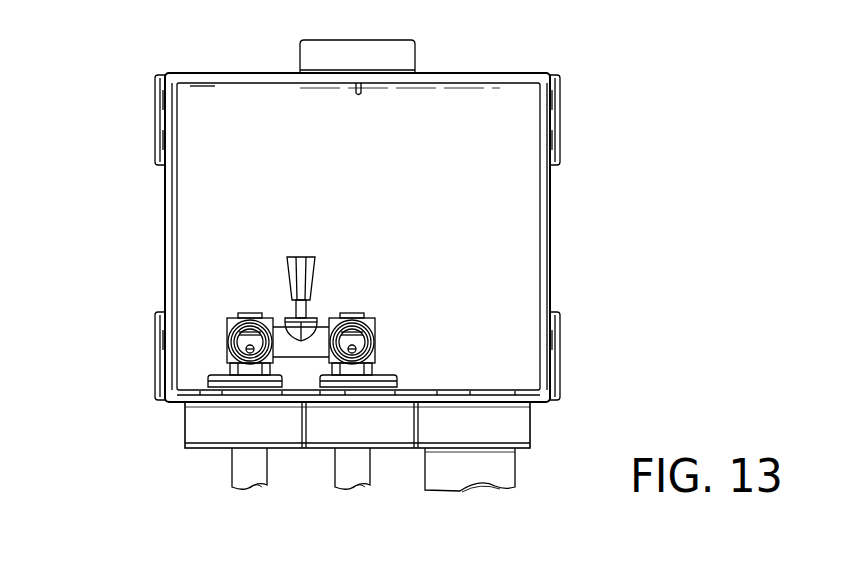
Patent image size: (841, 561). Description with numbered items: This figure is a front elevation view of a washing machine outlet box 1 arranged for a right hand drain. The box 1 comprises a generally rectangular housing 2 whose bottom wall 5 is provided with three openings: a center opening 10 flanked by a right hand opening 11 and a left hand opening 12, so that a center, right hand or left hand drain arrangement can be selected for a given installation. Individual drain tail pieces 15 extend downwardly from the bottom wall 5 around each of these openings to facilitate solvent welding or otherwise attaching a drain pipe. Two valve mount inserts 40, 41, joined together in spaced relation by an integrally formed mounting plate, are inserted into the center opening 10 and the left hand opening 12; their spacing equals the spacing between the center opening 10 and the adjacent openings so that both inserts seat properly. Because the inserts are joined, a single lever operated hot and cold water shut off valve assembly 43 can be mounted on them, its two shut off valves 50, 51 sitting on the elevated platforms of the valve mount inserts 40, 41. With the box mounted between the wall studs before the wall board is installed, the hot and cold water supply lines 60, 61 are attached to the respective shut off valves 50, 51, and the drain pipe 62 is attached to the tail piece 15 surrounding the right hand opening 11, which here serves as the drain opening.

The box 1 is at (128, 139).
The housing 2 is at (515, 62).
The bottom wall 5 is at (526, 385).
The center opening 10 is at (350, 400).
The right hand opening 11 is at (493, 405).
The left hand opening 12 is at (227, 405).
The drain tail piece 15 is at (510, 433).
The valve mount insert 40 is at (203, 373).
The valve mount insert 41 is at (401, 372).
The single lever operated hot and cold water shut off valve assembly 43 is at (387, 317).
The shut off valve 50 is at (222, 343).
The shut off valve 51 is at (383, 343).
The hot water supply line 60 is at (235, 470).
The cold water supply line 61 is at (370, 465).
The drain pipe 62 is at (512, 463).